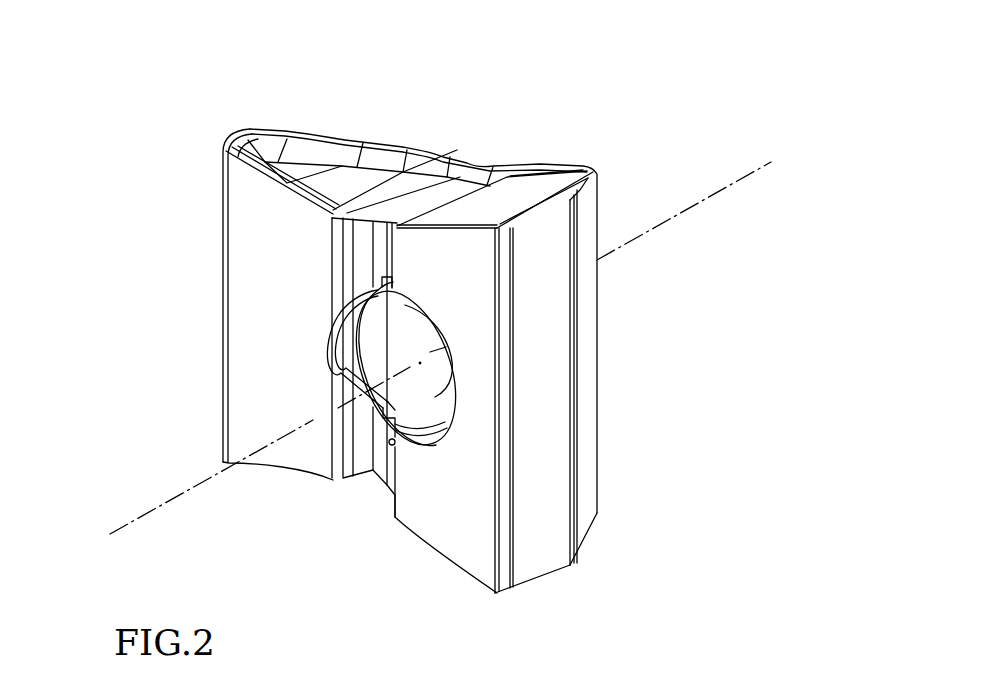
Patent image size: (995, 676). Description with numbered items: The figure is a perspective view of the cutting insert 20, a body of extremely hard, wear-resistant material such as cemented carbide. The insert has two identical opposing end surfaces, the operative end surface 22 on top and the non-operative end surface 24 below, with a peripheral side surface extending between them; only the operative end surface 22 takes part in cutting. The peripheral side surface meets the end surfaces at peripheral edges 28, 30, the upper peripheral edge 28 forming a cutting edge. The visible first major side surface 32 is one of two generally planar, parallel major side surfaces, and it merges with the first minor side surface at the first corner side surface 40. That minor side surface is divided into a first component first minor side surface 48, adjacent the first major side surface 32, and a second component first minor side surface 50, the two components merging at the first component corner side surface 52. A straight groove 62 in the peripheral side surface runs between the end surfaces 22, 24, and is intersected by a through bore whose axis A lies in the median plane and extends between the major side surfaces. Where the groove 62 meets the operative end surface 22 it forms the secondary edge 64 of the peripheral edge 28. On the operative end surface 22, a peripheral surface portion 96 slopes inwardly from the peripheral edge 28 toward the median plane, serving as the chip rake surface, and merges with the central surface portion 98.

The cutting insert 20 is at (180, 88).
The operative end surface 22 is at (368, 122).
The non-operative end surface 24 is at (282, 486).
The peripheral edge 28 is at (392, 125).
The peripheral edge 30 is at (400, 535).
The first major side surface 32 is at (248, 362).
The first corner side surface 40 is at (500, 563).
The first component first minor side surface 48 is at (543, 547).
The second component first minor side surface 50 is at (587, 488).
The first component corner side surface 52 is at (572, 533).
The groove 62 is at (377, 452).
The secondary edge 64 is at (360, 220).
The peripheral surface portion 96 is at (472, 170).
The central surface portion 98 is at (525, 197).
The axis A is at (152, 512).